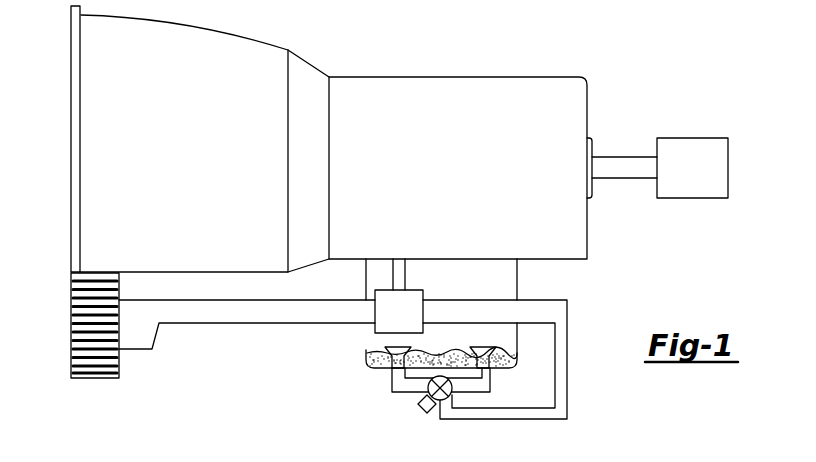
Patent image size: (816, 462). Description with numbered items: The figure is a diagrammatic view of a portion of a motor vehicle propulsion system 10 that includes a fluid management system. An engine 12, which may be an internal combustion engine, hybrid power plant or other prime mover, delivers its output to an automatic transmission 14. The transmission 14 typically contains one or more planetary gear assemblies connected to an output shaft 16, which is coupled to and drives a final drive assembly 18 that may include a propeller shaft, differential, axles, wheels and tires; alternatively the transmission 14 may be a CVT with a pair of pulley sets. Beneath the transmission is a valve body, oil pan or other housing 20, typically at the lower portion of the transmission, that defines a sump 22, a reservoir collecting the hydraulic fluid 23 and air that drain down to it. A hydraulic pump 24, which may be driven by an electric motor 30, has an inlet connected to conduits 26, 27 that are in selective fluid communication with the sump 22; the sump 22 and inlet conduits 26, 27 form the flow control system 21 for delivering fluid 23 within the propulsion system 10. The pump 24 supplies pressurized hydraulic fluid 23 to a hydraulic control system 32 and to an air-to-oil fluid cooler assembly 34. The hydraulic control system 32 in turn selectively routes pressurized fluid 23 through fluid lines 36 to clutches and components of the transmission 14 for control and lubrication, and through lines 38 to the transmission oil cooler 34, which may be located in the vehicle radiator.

The motor vehicle propulsion system 10 is at (576, 40).
The engine 12 is at (173, 163).
The automatic transmission 14 is at (448, 181).
The output shaft 16 is at (628, 165).
The final drive assembly 18 is at (684, 178).
The housing 20 is at (517, 338).
The flow control system 21 is at (582, 316).
The sump 22 is at (427, 352).
The hydraulic fluid 23 is at (370, 363).
The hydraulic pump 24 is at (451, 393).
The inlet conduit 26 is at (392, 383).
The inlet conduit 27 is at (495, 378).
The electric motor 30 is at (419, 408).
The hydraulic control system 32 is at (367, 338).
The fluid cooler assembly 34 is at (73, 316).
The fluid lines 36 is at (405, 273).
The lines 38 is at (183, 327).